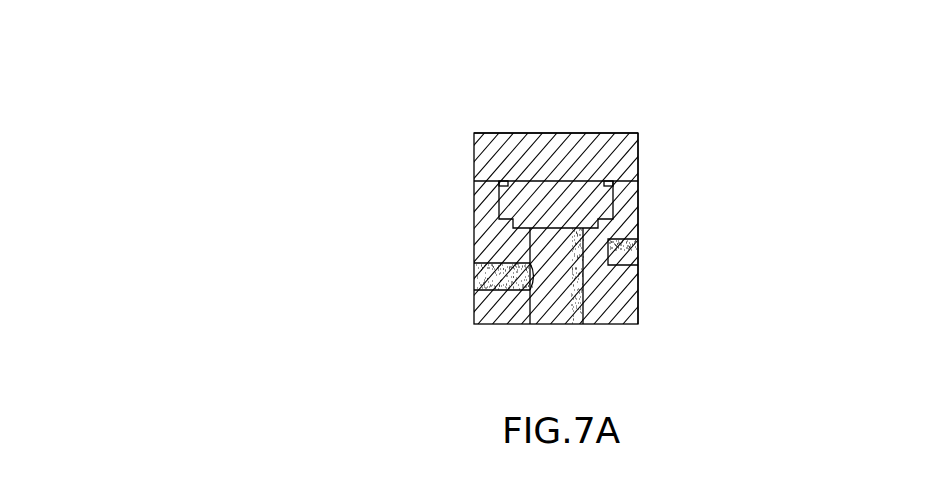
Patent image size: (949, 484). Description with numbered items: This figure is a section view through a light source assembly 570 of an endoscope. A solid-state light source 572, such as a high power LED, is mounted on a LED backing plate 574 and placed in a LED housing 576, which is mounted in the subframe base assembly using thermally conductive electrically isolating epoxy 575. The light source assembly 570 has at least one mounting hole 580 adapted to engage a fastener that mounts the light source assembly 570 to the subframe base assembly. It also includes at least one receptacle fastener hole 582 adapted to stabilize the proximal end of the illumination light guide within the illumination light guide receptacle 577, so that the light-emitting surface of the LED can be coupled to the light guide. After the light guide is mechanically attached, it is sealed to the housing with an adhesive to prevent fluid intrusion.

The light source assembly 570 is at (221, 265).
The LED backing plate 574 is at (517, 132).
The thermally conductive electrically isolating epoxy 575 is at (544, 180).
The solid-state light source 572 is at (616, 204).
The mounting hole 580 is at (628, 252).
The LED housing 576 is at (639, 300).
The receptacle fastener hole 582 is at (475, 277).
The illumination light guide receptacle 577 is at (555, 325).